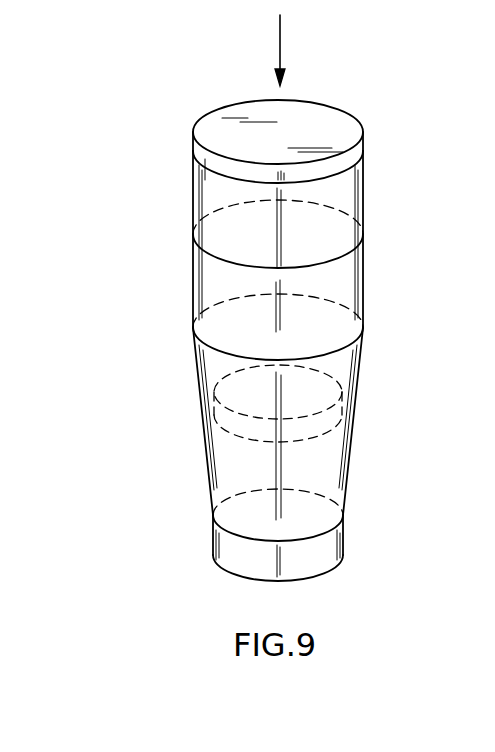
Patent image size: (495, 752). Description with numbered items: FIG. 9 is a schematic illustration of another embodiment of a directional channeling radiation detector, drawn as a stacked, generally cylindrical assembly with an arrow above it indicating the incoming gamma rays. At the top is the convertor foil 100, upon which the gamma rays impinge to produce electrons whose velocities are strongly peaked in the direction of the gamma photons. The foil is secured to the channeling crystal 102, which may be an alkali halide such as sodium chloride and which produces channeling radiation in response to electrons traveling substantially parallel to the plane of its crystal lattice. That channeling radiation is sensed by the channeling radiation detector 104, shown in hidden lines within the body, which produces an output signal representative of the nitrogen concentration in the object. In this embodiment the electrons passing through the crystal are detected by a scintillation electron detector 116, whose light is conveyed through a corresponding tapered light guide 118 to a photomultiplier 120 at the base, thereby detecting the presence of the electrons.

The convertor foil 100 is at (363, 146).
The channeling crystal 102 is at (363, 189).
The scintillation electron detector 116 is at (363, 279).
The channeling radiation detector 104 is at (214, 410).
The light guide 118 is at (207, 475).
The photomultiplier 120 is at (343, 540).